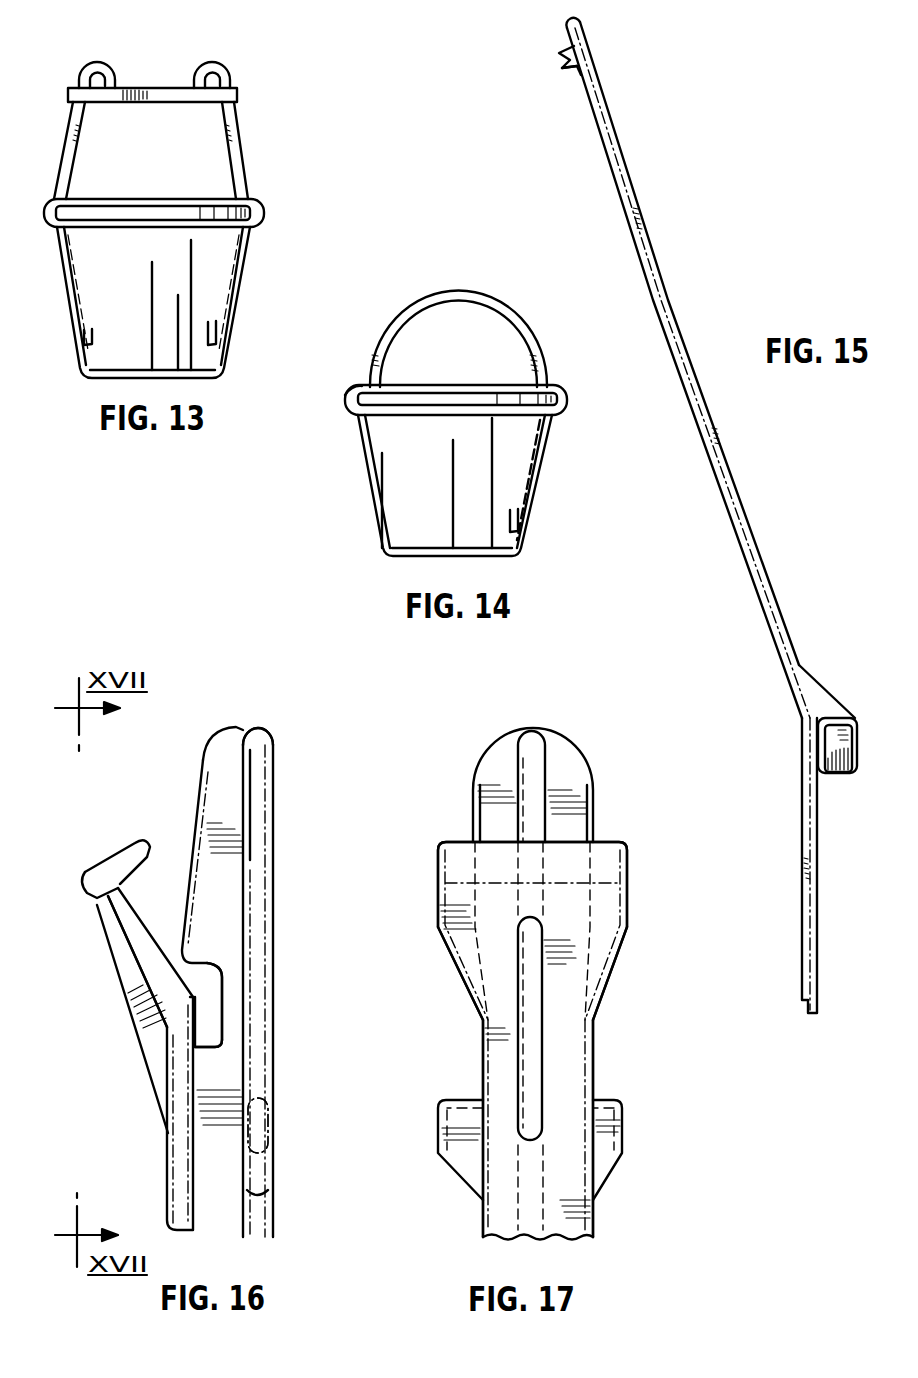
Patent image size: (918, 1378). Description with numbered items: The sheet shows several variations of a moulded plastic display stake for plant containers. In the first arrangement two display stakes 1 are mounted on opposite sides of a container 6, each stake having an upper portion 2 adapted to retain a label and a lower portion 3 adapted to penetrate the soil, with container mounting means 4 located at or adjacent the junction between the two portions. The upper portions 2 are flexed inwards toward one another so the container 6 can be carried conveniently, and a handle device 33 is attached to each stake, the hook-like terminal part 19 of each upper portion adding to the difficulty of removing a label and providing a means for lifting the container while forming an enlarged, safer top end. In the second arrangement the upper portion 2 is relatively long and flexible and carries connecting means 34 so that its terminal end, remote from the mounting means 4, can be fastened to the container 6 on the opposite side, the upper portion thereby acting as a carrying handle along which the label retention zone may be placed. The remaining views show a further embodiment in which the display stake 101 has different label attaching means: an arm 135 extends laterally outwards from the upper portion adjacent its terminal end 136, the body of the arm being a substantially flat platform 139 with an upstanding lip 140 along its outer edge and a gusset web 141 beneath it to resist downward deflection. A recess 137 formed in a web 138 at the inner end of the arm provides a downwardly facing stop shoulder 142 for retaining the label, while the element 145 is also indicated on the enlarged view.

In FIG. 13, the display stake 1 is at (92, 152).
In FIG. 14, the upper portion 2 is at (423, 294).
In FIG. 15, the upper portion 2 is at (668, 246).
In FIG. 16, the upper portion 2 is at (276, 906).
In FIG. 17, the upper portion 2 is at (532, 984).
In FIG. 13, the lower portion 3 is at (252, 250).
In FIG. 14, the lower portion 3 is at (522, 469).
In FIG. 15, the lower portion 3 is at (800, 860).
In FIG. 13, the container mounting means 4 is at (50, 200).
In FIG. 14, the container mounting means 4 is at (568, 392).
In FIG. 15, the container mounting means 4 is at (849, 720).
In FIG. 13, the container 6 is at (176, 290).
In FIG. 14, the container 6 is at (424, 498).
In FIG. 13, the terminal part 19 is at (97, 62).
In FIG. 13, the handle device 33 is at (157, 88).
In FIG. 14, the connecting means 34 is at (346, 392).
In FIG. 15, the display stake 101 is at (675, 515).
In FIG. 15, the arm 135 is at (557, 64).
In FIG. 16, the arm 135 is at (127, 958).
In FIG. 17, the arm 135 is at (572, 967).
In FIG. 15, the terminal end 136 is at (578, 24).
In FIG. 16, the terminal end 136 is at (247, 728).
In FIG. 17, the terminal end 136 is at (535, 725).
In FIG. 16, the recess 137 is at (205, 990).
In FIG. 16, the web 138 is at (232, 1085).
In FIG. 16, the platform 139 is at (140, 910).
In FIG. 17, the platform 139 is at (628, 915).
In FIG. 15, the upstanding lip 140 is at (556, 52).
In FIG. 16, the upstanding lip 140 is at (133, 852).
In FIG. 17, the upstanding lip 140 is at (628, 860).
In FIG. 15, the gusset web 141 is at (578, 78).
In FIG. 16, the gusset web 141 is at (153, 1028).
In FIG. 17, the gusset web 141 is at (533, 1043).
In FIG. 16, the stop shoulder 142 is at (215, 988).
In FIG. 16, the edge 145 is at (213, 1030).